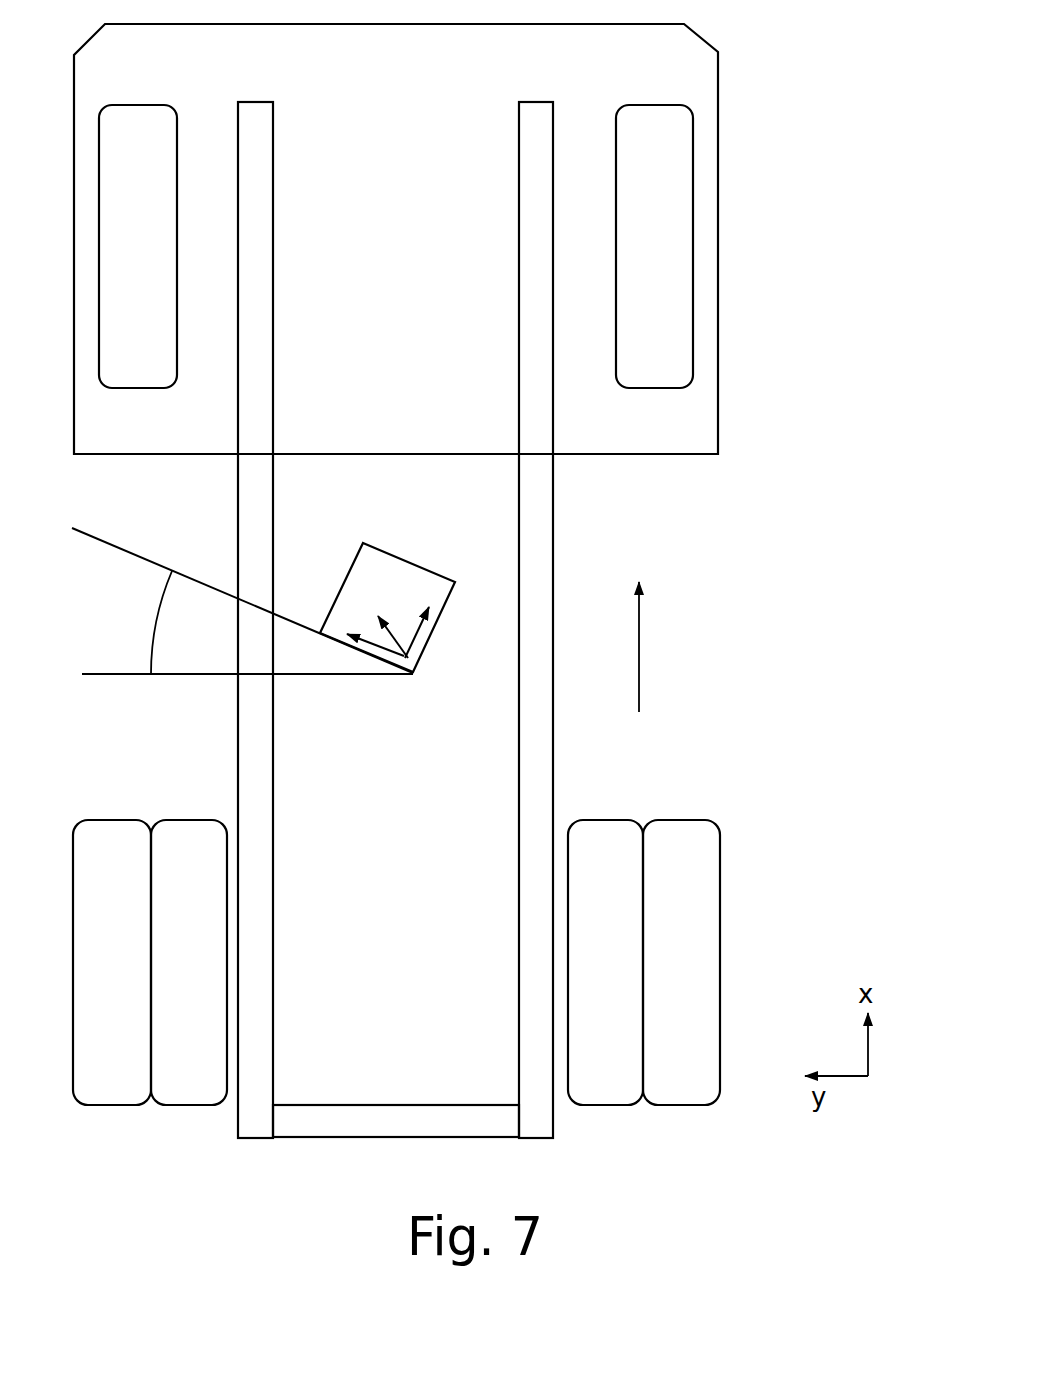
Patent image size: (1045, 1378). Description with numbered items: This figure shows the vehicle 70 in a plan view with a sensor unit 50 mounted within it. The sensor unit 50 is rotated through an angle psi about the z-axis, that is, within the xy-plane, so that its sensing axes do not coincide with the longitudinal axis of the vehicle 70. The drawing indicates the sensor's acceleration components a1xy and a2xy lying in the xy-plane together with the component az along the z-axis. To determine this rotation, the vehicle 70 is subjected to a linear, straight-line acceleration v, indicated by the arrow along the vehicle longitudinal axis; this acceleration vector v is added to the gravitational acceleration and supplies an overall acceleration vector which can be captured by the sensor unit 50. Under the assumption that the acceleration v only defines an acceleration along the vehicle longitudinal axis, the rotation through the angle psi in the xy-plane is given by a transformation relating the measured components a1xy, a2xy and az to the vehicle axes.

The vehicle 70 is at (706, 207).
The sensor unit 50 is at (385, 570).
The acceleration component az is at (384, 615).
The acceleration component a1xy is at (432, 603).
The acceleration component a2xy is at (349, 628).
The rotation angle ψ psi is at (242, 601).
The linear acceleration v̇ v is at (652, 647).